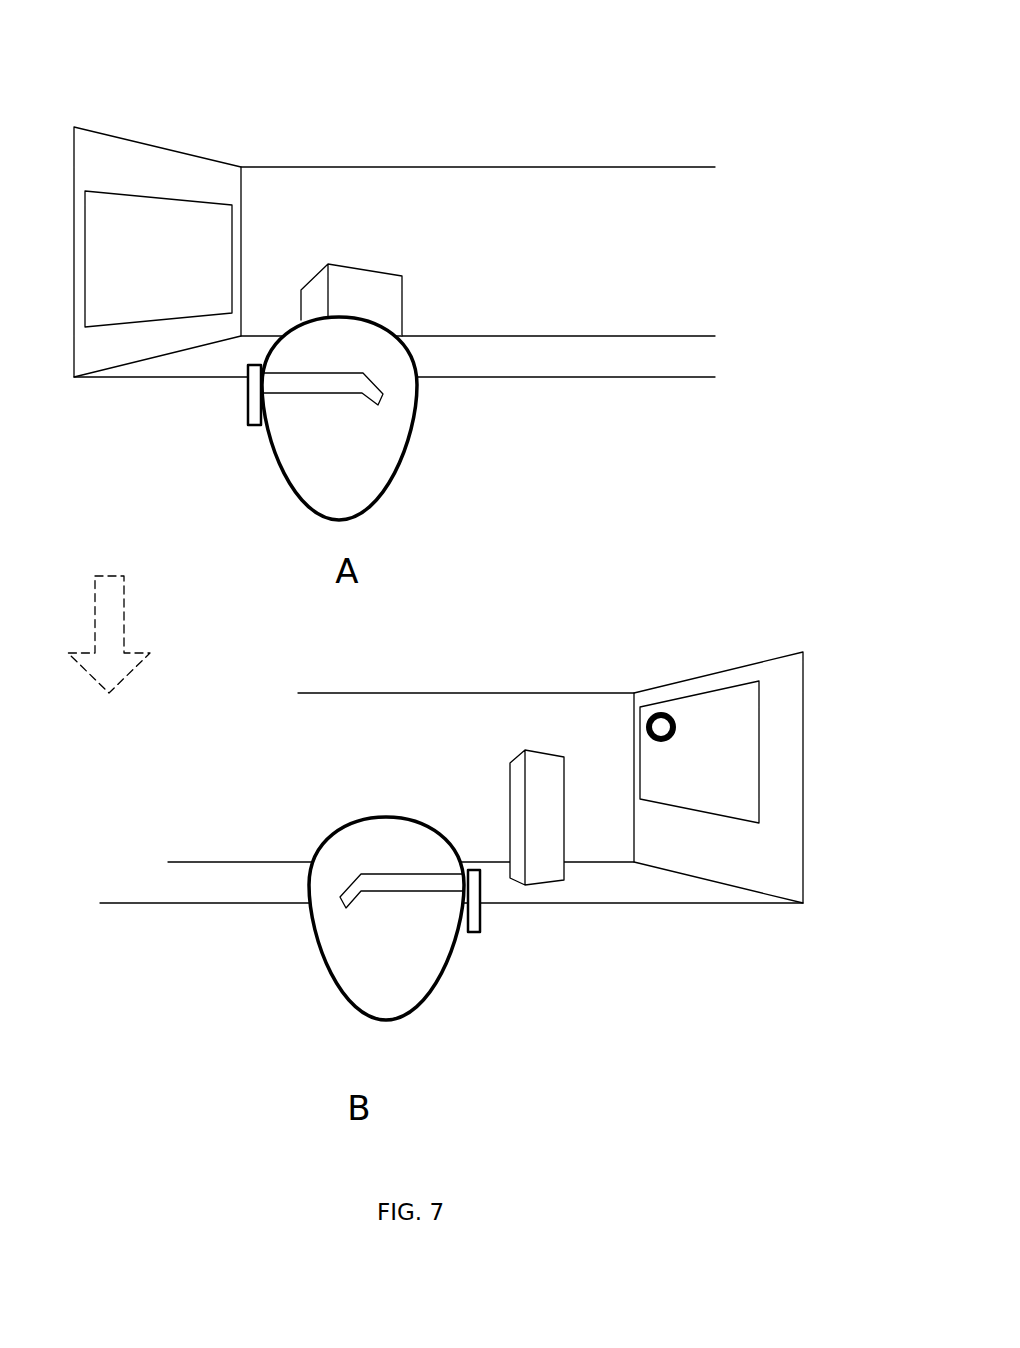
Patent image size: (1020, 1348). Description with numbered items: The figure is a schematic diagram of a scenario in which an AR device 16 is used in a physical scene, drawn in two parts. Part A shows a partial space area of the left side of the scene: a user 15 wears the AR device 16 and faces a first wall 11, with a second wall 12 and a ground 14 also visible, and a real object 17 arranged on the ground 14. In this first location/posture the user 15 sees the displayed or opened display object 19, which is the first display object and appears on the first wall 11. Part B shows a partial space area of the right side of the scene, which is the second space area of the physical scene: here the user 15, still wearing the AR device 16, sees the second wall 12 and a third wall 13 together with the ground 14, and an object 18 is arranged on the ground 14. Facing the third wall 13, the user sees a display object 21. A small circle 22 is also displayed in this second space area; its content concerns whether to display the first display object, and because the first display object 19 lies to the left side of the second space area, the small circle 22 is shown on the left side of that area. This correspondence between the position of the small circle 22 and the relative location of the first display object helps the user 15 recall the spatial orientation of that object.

The first wall 11 is at (111, 156).
The second wall 12 is at (600, 205).
The third wall 13 is at (782, 682).
The ground 14 is at (570, 365).
The user 15 is at (387, 452).
The AR device 16 is at (258, 393).
The real object 17 is at (362, 276).
The object 18 is at (548, 853).
The display object 19 is at (157, 198).
The display object 21 is at (733, 708).
The small circle 22 is at (658, 710).